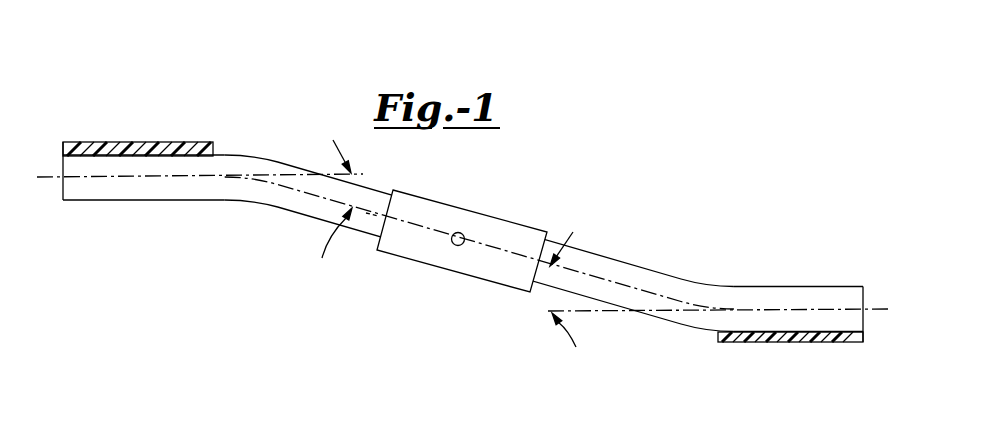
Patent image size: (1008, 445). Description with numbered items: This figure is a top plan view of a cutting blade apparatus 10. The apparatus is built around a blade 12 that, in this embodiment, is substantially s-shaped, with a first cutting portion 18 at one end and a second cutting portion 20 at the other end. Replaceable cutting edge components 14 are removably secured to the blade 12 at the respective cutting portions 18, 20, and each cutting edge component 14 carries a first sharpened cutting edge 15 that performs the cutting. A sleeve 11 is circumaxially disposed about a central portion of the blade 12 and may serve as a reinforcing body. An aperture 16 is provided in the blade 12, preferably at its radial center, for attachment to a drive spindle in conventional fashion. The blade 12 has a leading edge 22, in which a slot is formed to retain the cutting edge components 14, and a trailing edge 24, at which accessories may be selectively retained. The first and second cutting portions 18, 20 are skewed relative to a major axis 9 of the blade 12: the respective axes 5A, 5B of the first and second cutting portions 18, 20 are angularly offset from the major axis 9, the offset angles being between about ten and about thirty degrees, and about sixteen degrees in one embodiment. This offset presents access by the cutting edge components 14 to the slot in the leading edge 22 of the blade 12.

The major axis 9 is at (366, 213).
The cutting blade apparatus 10 is at (707, 211).
The sleeve 11 is at (520, 226).
The blade 12 is at (619, 242).
The cutting edge component 14 is at (178, 129).
The first sharpened cutting edge 15 is at (775, 343).
The aperture 16 is at (465, 233).
The first cutting portion 18 is at (63, 191).
The second cutting portion 20 is at (866, 292).
The leading edge 22 is at (236, 155).
The trailing edge 24 is at (133, 202).
The axis of first cutting portion 5A is at (43, 178).
The axis of second cutting portion 5B is at (880, 315).